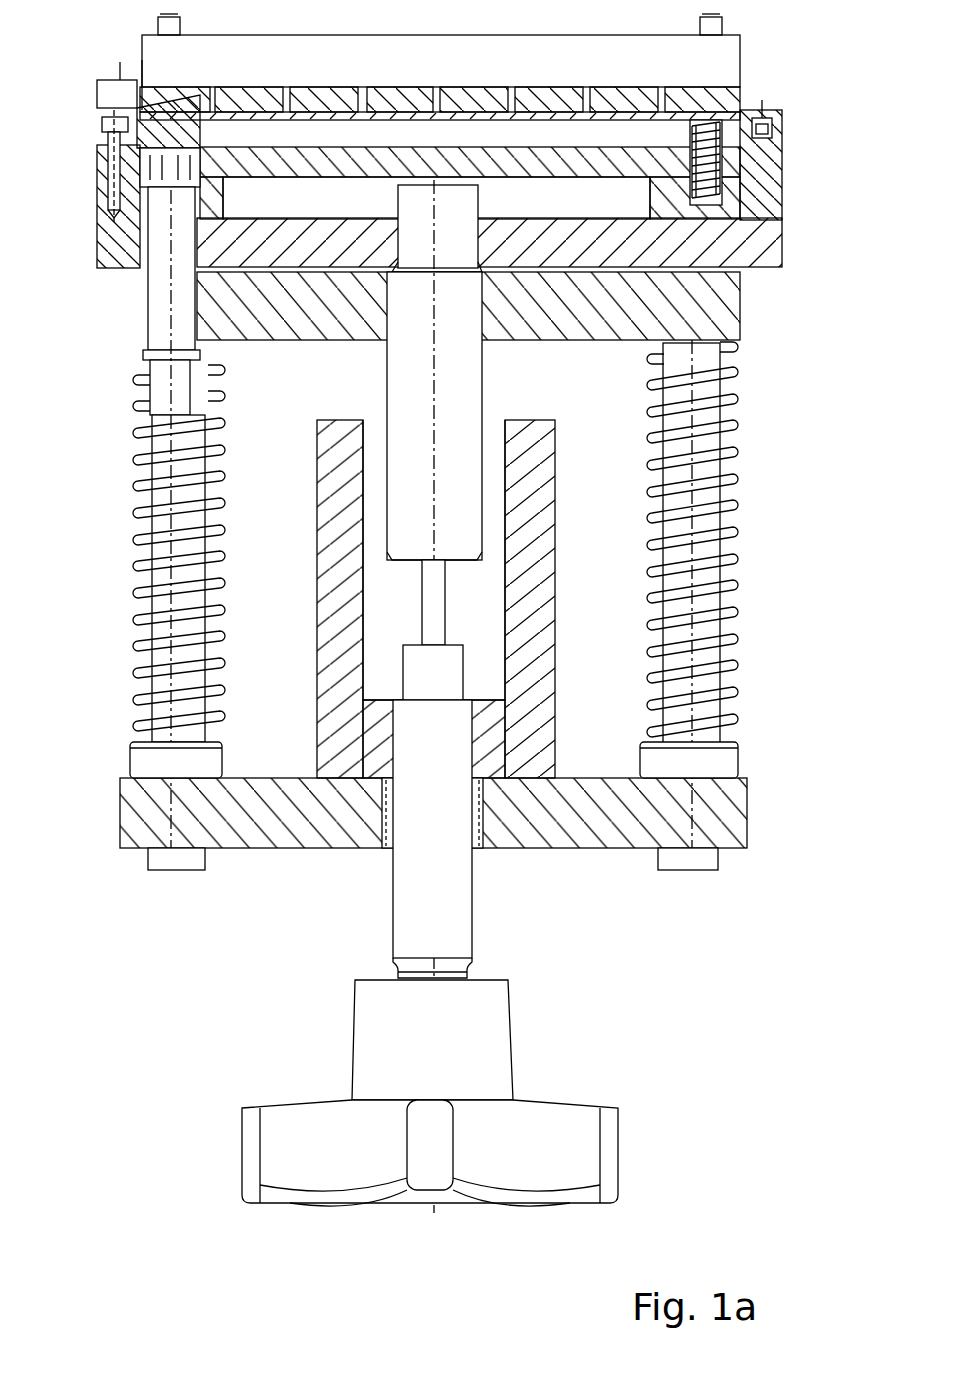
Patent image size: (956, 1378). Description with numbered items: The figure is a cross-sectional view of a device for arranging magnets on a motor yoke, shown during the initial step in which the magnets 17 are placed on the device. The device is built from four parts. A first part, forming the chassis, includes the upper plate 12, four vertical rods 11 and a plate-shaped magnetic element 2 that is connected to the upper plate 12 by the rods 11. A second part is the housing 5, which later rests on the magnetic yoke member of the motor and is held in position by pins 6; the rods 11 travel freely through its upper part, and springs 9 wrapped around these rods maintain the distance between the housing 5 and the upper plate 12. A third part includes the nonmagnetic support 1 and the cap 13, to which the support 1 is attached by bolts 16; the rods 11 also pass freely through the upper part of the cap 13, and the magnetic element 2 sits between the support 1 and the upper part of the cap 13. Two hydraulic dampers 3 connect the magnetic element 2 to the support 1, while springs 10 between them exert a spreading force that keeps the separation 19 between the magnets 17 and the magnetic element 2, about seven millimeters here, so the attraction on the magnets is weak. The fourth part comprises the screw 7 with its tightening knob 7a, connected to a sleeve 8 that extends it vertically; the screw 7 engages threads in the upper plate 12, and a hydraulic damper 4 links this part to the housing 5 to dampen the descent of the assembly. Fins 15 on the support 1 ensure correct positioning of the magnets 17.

The nonmagnetic support 1 is at (100, 100).
The magnetic element 2 is at (737, 220).
The hydraulic dampers 3 is at (160, 318).
The hydraulic damper 4 is at (470, 375).
The housing 5 is at (710, 302).
The pins 6 is at (706, 26).
The screw 7 is at (450, 895).
The tightening knob 7a is at (565, 1153).
The sleeve 8 is at (340, 656).
The springs 9 is at (735, 525).
The springs 10 is at (720, 175).
The vertical rods 11 is at (165, 612).
The upper plate 12 is at (655, 822).
The cap 13 is at (720, 248).
The fins 15 is at (287, 95).
The bolts 16 is at (108, 152).
The magnets 17 is at (474, 85).
The separation 19 is at (620, 77).